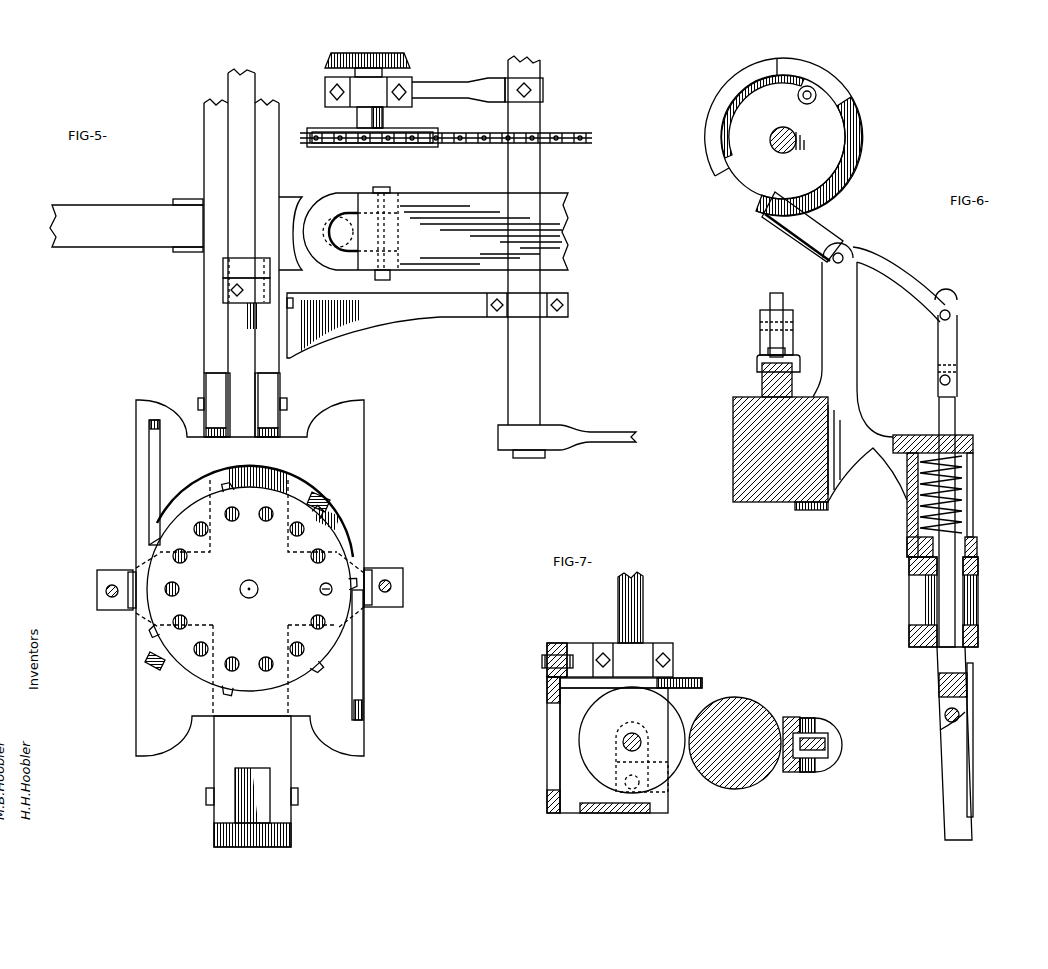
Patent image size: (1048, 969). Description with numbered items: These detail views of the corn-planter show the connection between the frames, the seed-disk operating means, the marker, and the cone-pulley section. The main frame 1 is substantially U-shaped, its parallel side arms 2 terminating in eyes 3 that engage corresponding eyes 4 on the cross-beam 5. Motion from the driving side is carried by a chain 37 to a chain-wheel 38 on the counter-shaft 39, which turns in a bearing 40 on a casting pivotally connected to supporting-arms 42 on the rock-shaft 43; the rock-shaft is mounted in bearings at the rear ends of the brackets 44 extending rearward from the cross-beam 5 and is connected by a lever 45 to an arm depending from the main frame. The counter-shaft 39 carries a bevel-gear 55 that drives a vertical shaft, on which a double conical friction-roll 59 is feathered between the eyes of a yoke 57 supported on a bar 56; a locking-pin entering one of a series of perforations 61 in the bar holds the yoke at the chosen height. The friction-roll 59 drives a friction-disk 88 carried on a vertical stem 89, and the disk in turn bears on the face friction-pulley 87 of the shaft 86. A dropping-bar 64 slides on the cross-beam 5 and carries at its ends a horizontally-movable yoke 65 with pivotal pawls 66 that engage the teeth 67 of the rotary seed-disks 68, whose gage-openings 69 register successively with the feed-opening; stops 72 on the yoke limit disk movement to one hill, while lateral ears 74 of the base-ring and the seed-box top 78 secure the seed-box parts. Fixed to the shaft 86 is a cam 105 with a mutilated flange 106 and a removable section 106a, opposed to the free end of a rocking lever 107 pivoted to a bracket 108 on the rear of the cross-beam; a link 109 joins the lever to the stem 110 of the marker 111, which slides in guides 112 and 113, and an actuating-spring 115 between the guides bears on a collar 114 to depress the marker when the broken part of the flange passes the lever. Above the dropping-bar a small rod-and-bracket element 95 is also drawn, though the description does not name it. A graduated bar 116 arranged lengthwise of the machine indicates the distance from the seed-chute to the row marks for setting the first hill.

In FIG. 5, the main frame 1 is at (463, 224).
In FIG. 5, the side arms 2 is at (463, 231).
In FIG. 5, the eyes 3 is at (352, 206).
In FIG. 5, the eyes 4 is at (338, 232).
In FIG. 5, the cross-beam 5 is at (276, 176).
In FIG. 6, the cross-beam 5 is at (722, 448).
In FIG. 5, the chain 37 is at (468, 134).
In FIG. 5, the chain-wheel 38 is at (406, 146).
In FIG. 5, the counter-shaft 39 is at (384, 112).
In FIG. 5, the bearing 40 is at (320, 588).
In FIG. 5, the supporting-arms 42 is at (460, 84).
In FIG. 5, the rock-shaft 43 is at (541, 164).
In FIG. 5, the brackets 44 is at (457, 322).
In FIG. 5, the lever 45 is at (595, 430).
In FIG. 5, the bevel-gear 55 is at (330, 60).
In FIG. 7, the bar 56 is at (814, 735).
In FIG. 7, the yoke 57 is at (786, 715).
In FIG. 7, the double conical friction-roll 59 is at (746, 700).
In FIG. 7, the perforations 61 is at (806, 735).
In FIG. 5, the dropping-bar 64 is at (226, 138).
In FIG. 6, the dropping-bar 64 is at (760, 379).
In FIG. 5, the yoke 65 is at (367, 450).
In FIG. 5, the pawls 66 is at (150, 466).
In FIG. 5, the teeth 67 is at (228, 688).
In FIG. 5, the seed-disks 68 is at (250, 590).
In FIG. 5, the gage-openings 69 is at (231, 522).
In FIG. 5, the stops 72 is at (321, 490).
In FIG. 5, the lateral ears 74 is at (97, 575).
In FIG. 5, the top 78 is at (111, 598).
In FIG. 7, the shaft 86 is at (646, 616).
In FIG. 6, the shaft 86 is at (786, 128).
In FIG. 7, the face friction-pulley 87 is at (696, 678).
In FIG. 7, the friction-disk 88 is at (632, 740).
In FIG. 7, the vertical stem 89 is at (642, 734).
In FIG. 6, the rod 95 is at (772, 310).
In FIG. 6, the cam 105 is at (862, 140).
In FIG. 6, the mutilated flange 106 is at (730, 162).
In FIG. 6, the removable section 106a is at (820, 90).
In FIG. 6, the rocking lever 107 is at (792, 240).
In FIG. 6, the bracket 108 is at (857, 343).
In FIG. 6, the link 109 is at (956, 348).
In FIG. 6, the stem 110 is at (956, 414).
In FIG. 6, the marker 111 is at (938, 734).
In FIG. 6, the guide 112 is at (974, 443).
In FIG. 6, the guide 113 is at (960, 602).
In FIG. 6, the collar 114 is at (978, 506).
In FIG. 6, the actuating-spring 115 is at (958, 488).
In FIG. 5, the graduated bar 116 is at (141, 240).